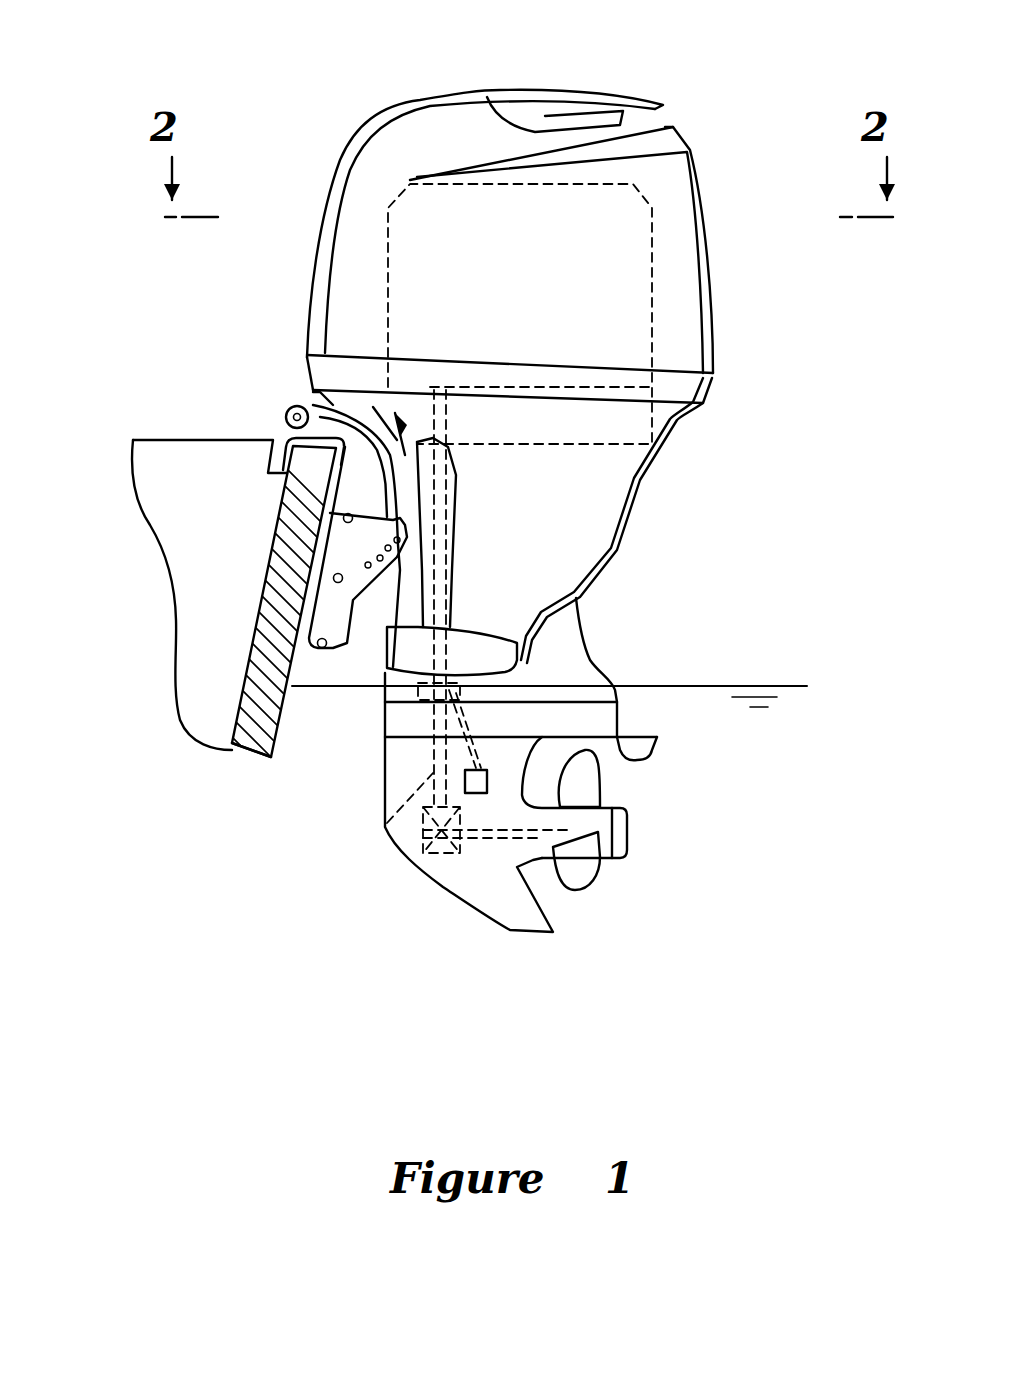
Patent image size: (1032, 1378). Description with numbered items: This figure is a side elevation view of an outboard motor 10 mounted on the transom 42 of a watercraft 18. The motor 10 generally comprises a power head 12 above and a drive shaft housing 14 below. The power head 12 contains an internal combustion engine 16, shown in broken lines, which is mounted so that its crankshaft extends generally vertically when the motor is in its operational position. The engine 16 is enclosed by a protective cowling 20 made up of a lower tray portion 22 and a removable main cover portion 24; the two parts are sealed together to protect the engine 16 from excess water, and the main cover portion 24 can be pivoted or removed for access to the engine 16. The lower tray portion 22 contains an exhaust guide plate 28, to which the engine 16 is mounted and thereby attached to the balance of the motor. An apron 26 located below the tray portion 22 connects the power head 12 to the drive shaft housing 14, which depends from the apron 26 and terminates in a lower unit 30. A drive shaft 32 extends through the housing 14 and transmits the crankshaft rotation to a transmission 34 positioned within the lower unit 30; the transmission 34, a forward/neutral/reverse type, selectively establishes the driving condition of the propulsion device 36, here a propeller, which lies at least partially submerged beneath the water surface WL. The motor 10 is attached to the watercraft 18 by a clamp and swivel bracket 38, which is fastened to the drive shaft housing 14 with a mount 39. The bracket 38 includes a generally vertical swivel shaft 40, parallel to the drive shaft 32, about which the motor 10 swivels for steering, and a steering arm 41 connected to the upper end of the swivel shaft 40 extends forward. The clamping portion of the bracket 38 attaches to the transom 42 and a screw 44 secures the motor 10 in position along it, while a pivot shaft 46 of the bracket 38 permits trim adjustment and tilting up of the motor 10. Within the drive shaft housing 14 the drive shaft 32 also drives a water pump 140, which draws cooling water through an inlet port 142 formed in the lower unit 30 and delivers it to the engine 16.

The outboard motor 10 is at (705, 83).
The power head 12 is at (727, 130).
The drive shaft housing 14 is at (688, 503).
The internal combustion engine 16 is at (657, 226).
The watercraft 18 is at (175, 457).
The protective cowling 20 is at (421, 86).
The lower tray portion 22 is at (710, 390).
The main cover portion 24 is at (715, 293).
The apron 26 is at (593, 547).
The exhaust guide plate 28 is at (643, 423).
The lower unit 30 is at (387, 773).
The drive shaft 32 is at (387, 827).
The transmission 34 is at (444, 856).
The propulsion device 36 is at (600, 783).
The clamp and swivel bracket 38 is at (340, 533).
The mount 39 is at (495, 645).
The swivel shaft 40 is at (403, 607).
The steering arm 41 is at (312, 388).
The transom 42 is at (248, 753).
The screw 44 is at (270, 463).
The pivot shaft 46 is at (300, 402).
The water pump 140 is at (460, 690).
The inlet port 142 is at (475, 797).